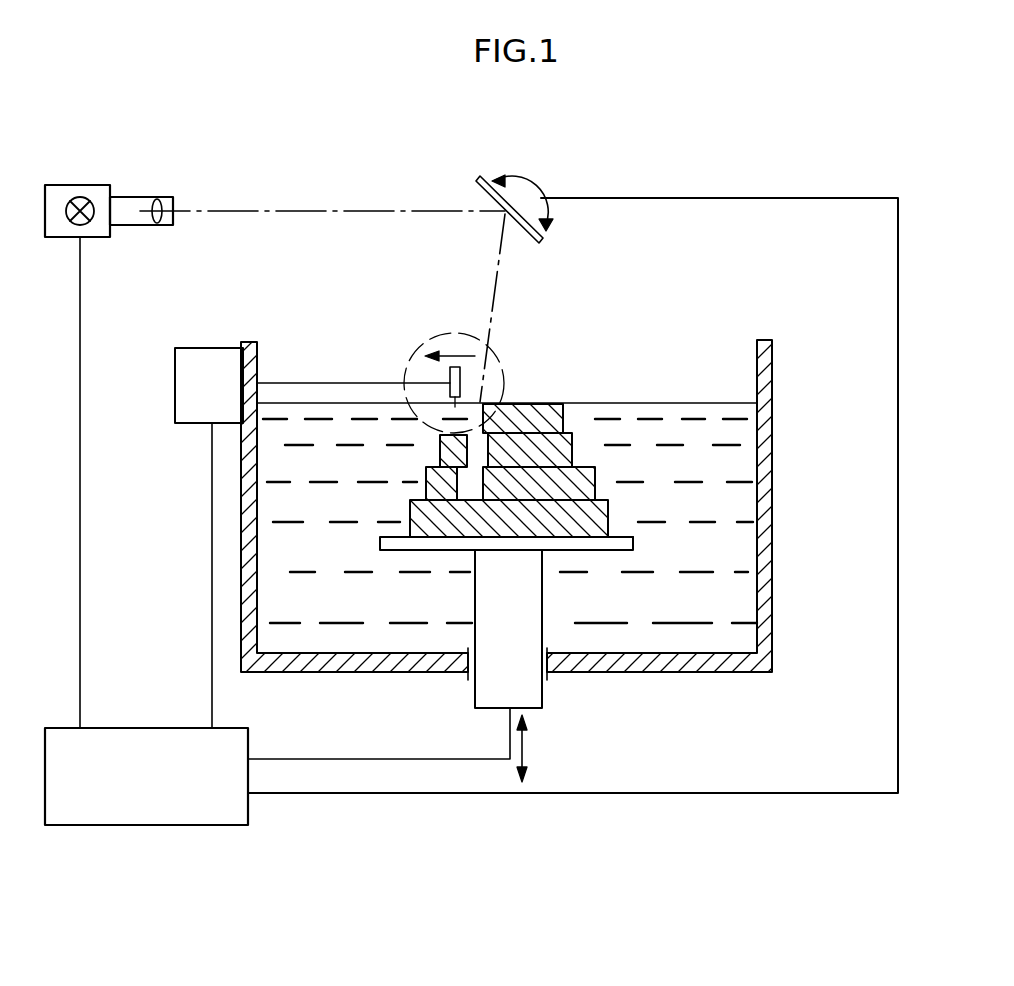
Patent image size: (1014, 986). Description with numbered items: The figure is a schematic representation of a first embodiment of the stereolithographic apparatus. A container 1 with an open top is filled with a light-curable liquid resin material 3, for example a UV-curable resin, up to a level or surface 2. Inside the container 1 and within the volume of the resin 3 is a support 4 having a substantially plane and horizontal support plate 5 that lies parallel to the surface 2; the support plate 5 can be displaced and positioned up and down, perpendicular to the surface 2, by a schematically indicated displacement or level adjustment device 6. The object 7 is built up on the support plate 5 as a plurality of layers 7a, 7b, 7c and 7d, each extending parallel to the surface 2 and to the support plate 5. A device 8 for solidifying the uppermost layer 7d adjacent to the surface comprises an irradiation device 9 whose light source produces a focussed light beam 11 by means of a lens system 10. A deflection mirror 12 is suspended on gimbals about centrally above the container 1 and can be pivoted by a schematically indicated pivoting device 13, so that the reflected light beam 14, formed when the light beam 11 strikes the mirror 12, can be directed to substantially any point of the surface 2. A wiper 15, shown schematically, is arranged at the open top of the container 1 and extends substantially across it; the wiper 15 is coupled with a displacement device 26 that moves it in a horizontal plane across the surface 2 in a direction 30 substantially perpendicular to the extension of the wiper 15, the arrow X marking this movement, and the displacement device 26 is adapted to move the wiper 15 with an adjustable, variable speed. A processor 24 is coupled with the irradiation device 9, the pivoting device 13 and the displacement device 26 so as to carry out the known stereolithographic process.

The container 1 is at (765, 408).
The surface 2 is at (292, 400).
The light-curable liquid resin material 3 is at (697, 573).
The support 4 is at (645, 547).
The support plate 5 is at (622, 535).
The displacement or level adjustment device 6 is at (527, 750).
The object 7 is at (577, 423).
The layer 7a is at (610, 525).
The layer 7b is at (595, 485).
The layer 7c is at (572, 450).
The uppermost layer 7d is at (563, 415).
The device for solidifying 8 is at (70, 185).
The irradiation device 9 is at (82, 197).
The lens system 10 is at (160, 197).
The light beam 11 is at (278, 210).
The deflection mirror 12 is at (480, 193).
The pivoting device 13 is at (530, 181).
The reflected light beam 14 is at (497, 290).
The wiper 15 is at (450, 378).
The processor 24 is at (130, 798).
The displacement device 26 is at (212, 362).
The direction 30 is at (462, 350).
The wiper movement direction X is at (440, 333).